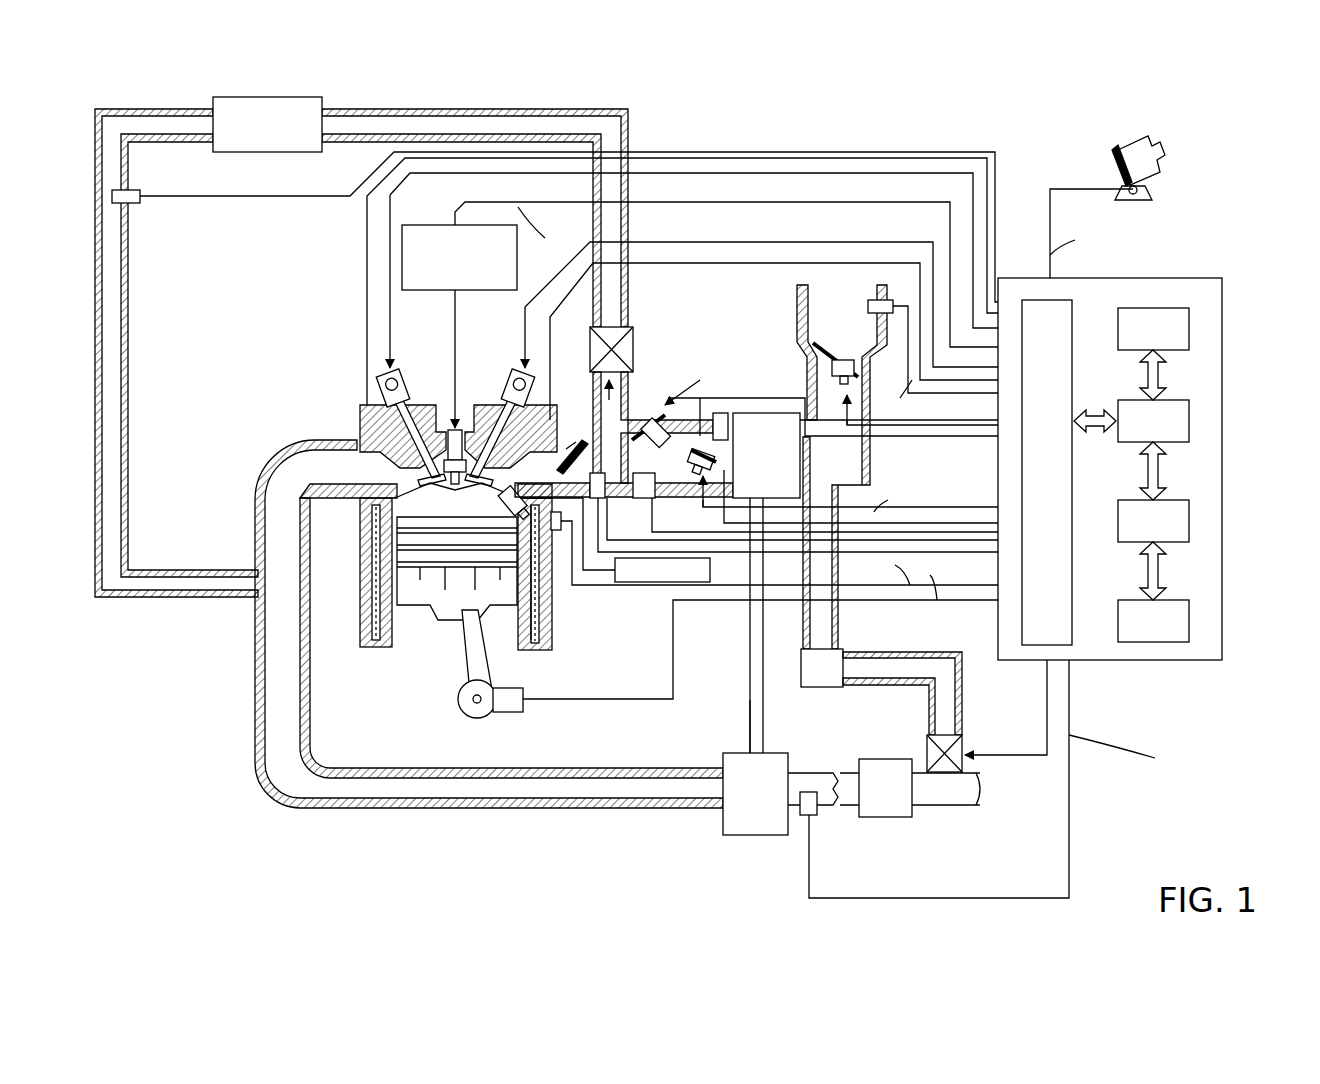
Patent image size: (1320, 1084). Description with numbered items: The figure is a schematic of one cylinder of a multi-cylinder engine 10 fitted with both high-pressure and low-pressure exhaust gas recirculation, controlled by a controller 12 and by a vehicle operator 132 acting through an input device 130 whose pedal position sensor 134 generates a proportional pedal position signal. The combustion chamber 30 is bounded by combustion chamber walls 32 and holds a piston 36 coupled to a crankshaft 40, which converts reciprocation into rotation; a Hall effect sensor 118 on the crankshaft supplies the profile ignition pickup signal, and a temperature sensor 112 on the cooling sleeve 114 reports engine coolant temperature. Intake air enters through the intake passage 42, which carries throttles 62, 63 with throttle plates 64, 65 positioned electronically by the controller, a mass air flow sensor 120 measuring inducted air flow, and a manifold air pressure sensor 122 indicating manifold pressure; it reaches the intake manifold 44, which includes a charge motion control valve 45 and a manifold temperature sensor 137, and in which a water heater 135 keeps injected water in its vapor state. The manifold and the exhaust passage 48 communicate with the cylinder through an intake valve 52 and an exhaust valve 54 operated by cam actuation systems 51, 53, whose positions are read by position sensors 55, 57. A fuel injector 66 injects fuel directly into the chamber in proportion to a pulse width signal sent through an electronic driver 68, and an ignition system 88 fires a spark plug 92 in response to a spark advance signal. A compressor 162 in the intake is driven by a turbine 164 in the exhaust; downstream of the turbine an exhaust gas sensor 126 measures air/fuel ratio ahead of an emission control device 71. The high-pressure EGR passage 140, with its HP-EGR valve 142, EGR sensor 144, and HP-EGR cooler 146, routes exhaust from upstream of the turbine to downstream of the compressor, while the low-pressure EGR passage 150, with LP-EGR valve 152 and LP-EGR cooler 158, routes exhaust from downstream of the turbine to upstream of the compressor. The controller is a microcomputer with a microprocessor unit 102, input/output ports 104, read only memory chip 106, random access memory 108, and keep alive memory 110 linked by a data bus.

The engine 10 is at (293, 356).
The controller 12 is at (1154, 455).
The combustion chamber 30 is at (392, 560).
The combustion chamber walls 32 is at (400, 650).
The piston 36 is at (440, 600).
The crankshaft 40 is at (468, 716).
The intake passage 42 is at (854, 330).
The intake manifold 44 is at (648, 468).
The charge motion control valve 45 is at (570, 444).
The exhaust passage 48 is at (343, 473).
The cam actuation system 51 is at (515, 368).
The intake valve 52 is at (500, 468).
The cam actuation system 53 is at (398, 368).
The exhaust valve 54 is at (410, 455).
The position sensor 55 is at (525, 395).
The position sensor 57 is at (402, 395).
The throttle 62 is at (653, 439).
The throttle 63 is at (812, 343).
The throttle plate 64 is at (847, 480).
The throttle plate 65 is at (830, 366).
The fuel injector 66 is at (503, 504).
The electronic driver 68 is at (710, 570).
The emission control device 71 is at (898, 798).
The ignition system 88 is at (418, 225).
The spark plug 92 is at (458, 428).
The microprocessor unit 102 is at (1190, 418).
The input/output ports 104 is at (1072, 300).
The read only memory chip 106 is at (1190, 320).
The random access memory 108 is at (1190, 515).
The keep alive memory 110 is at (1190, 615).
The temperature sensor 112 is at (545, 535).
The cooling sleeve 114 is at (548, 600).
The Hall effect sensor 118 is at (512, 712).
The mass air flow sensor 120 is at (886, 300).
The manifold air pressure sensor 122 is at (586, 457).
The exhaust gas sensor 126 is at (813, 815).
The input device 130 is at (1167, 205).
The vehicle operator 132 is at (1162, 148).
The pedal position sensor 134 is at (1150, 196).
The water heater 135 is at (632, 420).
The manifold temperature sensor 137 is at (805, 511).
The high-pressure EGR passage 140 is at (528, 108).
The HP-EGR valve 142 is at (630, 338).
The EGR sensor 144 is at (134, 203).
The HP-EGR cooler 146 is at (289, 134).
The low-pressure EGR passage 150 is at (925, 750).
The LP-EGR valve 152 is at (802, 753).
The LP-EGR cooler 158 is at (842, 679).
The compressor 162 is at (787, 466).
The turbine 164 is at (776, 804).